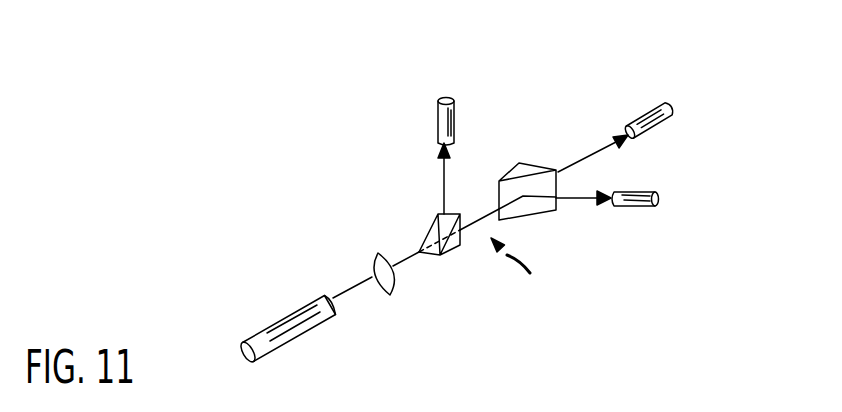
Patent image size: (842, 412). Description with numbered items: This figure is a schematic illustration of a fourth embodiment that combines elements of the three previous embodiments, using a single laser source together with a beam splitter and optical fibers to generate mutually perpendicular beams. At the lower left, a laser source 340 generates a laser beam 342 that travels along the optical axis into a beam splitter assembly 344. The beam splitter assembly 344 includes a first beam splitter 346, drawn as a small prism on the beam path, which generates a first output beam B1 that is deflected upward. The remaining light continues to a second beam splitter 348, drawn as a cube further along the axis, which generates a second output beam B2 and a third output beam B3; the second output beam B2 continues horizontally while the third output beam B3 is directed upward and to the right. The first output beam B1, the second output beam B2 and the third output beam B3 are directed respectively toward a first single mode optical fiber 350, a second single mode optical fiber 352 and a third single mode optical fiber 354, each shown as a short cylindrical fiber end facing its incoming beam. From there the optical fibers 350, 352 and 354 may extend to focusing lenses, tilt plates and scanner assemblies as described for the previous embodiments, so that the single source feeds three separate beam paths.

The laser source 340 is at (265, 329).
The laser beam 342 is at (352, 290).
The beam splitter assembly 344 is at (529, 273).
The first beam splitter 346 is at (453, 256).
The second beam splitter 348 is at (508, 162).
The first single mode optical fiber 350 is at (437, 122).
The second single mode optical fiber 352 is at (642, 191).
The third single mode optical fiber 354 is at (653, 108).
The first output beam B1 is at (438, 188).
The second output beam B2 is at (580, 205).
The third output beam B3 is at (585, 157).